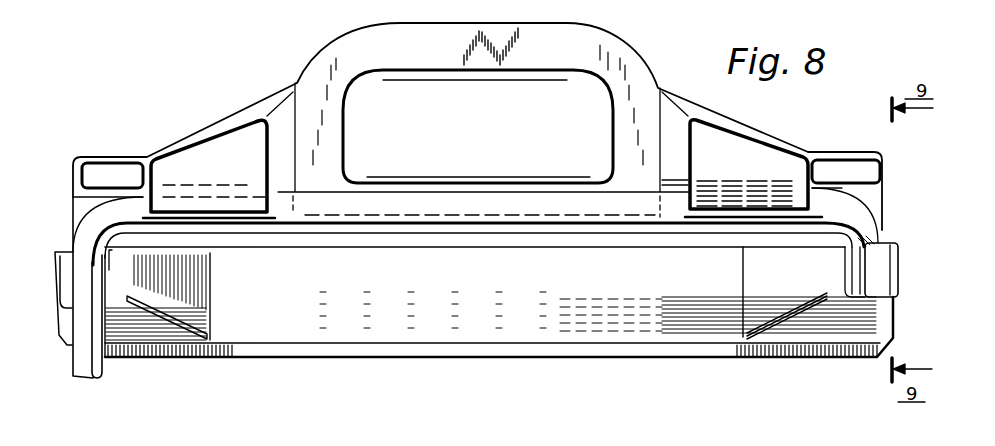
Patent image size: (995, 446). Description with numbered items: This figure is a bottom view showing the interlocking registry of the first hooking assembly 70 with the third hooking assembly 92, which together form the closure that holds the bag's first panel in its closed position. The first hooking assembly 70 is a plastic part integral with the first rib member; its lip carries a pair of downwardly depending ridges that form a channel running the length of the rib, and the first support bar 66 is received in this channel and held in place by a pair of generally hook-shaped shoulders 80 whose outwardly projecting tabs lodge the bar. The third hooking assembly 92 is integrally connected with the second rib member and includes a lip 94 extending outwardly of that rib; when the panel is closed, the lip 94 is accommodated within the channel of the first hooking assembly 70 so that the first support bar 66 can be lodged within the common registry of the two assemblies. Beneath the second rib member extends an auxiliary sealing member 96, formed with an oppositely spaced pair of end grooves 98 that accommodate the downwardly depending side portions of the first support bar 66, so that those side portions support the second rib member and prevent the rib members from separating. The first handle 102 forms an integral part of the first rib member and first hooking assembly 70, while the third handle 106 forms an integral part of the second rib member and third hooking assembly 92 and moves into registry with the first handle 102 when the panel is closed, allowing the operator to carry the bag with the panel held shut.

The first hooking assembly 70 is at (268, 83).
The hook-shaped shoulders 80 is at (201, 156).
The first handle 102 is at (467, 75).
The third handle 106 is at (463, 33).
The first support bar 66 is at (507, 210).
The lip 94 is at (437, 240).
The third hooking assembly 92 is at (290, 297).
The auxiliary sealing member 96 is at (463, 333).
The end grooves 98 is at (70, 305).